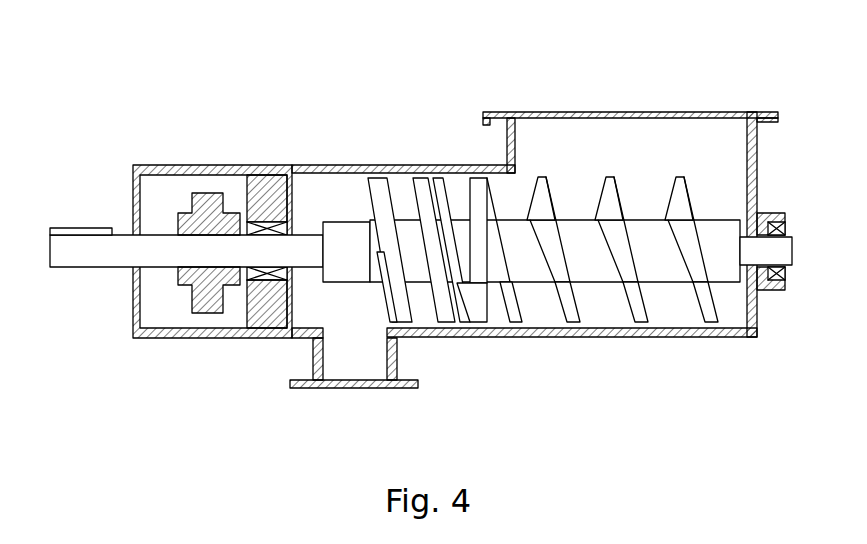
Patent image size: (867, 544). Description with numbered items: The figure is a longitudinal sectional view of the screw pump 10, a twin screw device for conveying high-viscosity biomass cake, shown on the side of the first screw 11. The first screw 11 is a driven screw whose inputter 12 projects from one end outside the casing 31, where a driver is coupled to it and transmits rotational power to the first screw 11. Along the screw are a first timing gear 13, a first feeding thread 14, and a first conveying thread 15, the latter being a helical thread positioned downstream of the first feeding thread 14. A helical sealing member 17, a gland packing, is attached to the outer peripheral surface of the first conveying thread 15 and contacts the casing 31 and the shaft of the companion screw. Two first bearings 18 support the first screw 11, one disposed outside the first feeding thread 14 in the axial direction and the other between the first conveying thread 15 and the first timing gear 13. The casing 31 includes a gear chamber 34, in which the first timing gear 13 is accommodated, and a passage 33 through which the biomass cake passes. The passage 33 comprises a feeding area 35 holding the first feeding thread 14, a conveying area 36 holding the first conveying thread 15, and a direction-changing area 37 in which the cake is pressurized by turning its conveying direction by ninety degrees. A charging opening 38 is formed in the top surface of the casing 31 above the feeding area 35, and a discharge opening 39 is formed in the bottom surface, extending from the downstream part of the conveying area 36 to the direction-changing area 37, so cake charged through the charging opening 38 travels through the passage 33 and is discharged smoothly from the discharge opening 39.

The screw pump 10 is at (305, 90).
The first screw 11 is at (88, 226).
The inputter 12 is at (95, 260).
The first timing gear 13 is at (207, 193).
The first feeding thread 14 is at (557, 262).
The first conveying thread 15 is at (453, 176).
The sealing member 17 is at (424, 176).
The first bearing 18 is at (265, 176).
The casing 31 is at (759, 170).
The passage 33 is at (629, 156).
The gear chamber 34 is at (172, 206).
The feeding area 35 is at (599, 307).
The conveying area 36 is at (427, 309).
The direction-changing area 37 is at (307, 196).
The charging opening 38 is at (745, 128).
The discharge opening 39 is at (388, 378).